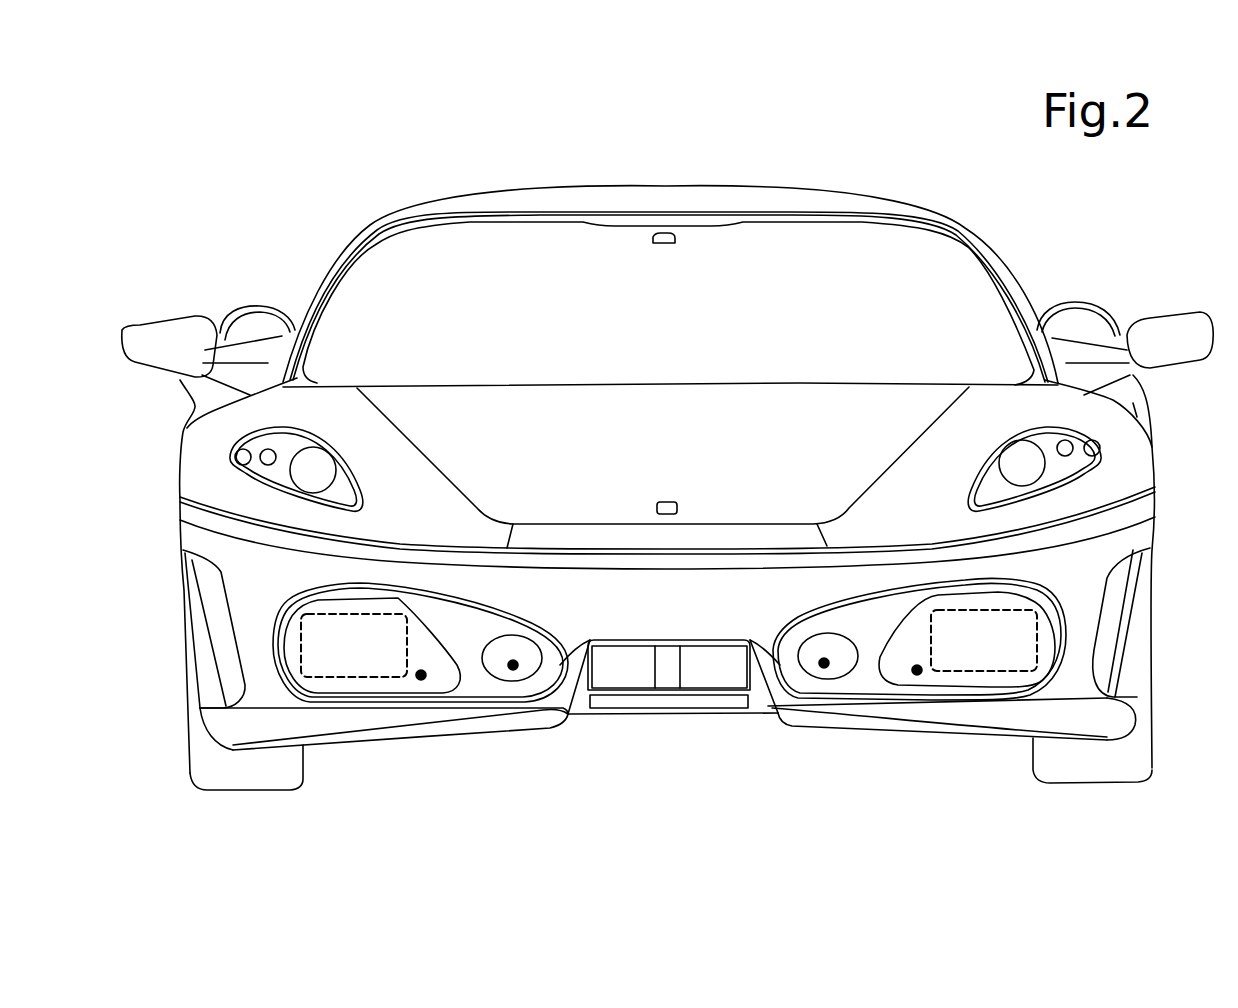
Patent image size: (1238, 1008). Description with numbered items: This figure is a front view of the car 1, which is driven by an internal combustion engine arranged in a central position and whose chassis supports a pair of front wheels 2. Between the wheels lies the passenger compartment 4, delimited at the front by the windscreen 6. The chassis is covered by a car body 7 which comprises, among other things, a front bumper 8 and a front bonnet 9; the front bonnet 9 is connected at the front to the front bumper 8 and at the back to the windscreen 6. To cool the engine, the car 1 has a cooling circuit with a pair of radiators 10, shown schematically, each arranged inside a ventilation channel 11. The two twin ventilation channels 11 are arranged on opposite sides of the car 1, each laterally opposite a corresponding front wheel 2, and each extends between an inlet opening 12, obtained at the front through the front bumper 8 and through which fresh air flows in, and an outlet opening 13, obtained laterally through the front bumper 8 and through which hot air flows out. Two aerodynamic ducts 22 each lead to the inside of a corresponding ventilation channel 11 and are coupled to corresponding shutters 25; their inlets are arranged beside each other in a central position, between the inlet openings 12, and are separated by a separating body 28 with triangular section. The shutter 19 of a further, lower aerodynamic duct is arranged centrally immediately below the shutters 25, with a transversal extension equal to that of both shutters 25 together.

The car 1 is at (667, 434).
The front wheels 2 is at (262, 767).
The passenger compartment 4 is at (652, 162).
The windscreen 6 is at (820, 253).
The car body 7 is at (289, 210).
The front bumper 8 is at (1017, 712).
The front bonnet 9 is at (873, 413).
The radiators 10 is at (347, 647).
The ventilation channels 11 is at (421, 680).
The inlet openings 12 is at (468, 710).
The outlet openings 13 is at (203, 658).
The shutter 19 is at (673, 705).
The aerodynamic ducts 22 is at (513, 671).
The shutters 25 is at (618, 670).
The separating body 28 is at (667, 672).